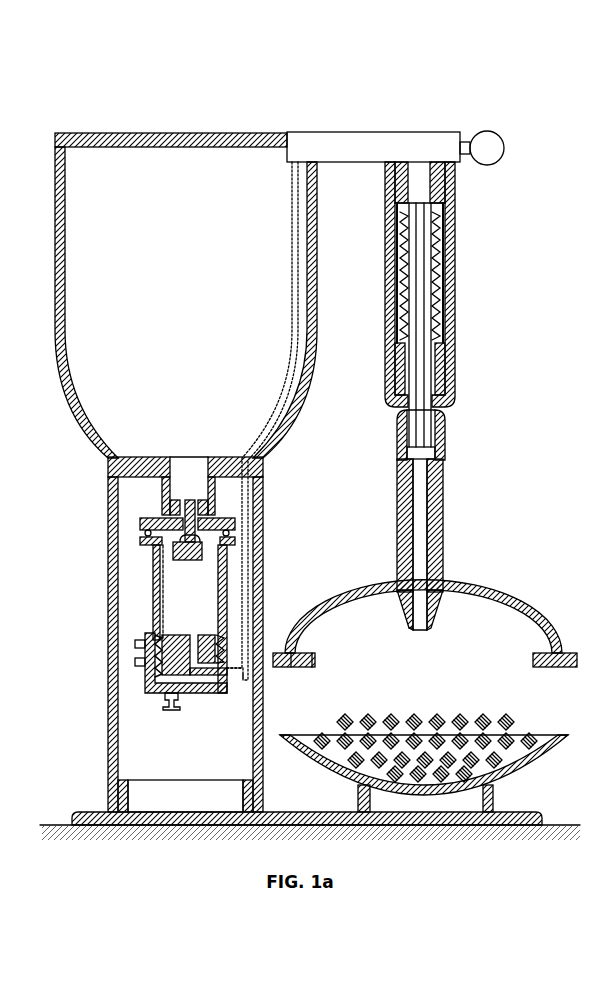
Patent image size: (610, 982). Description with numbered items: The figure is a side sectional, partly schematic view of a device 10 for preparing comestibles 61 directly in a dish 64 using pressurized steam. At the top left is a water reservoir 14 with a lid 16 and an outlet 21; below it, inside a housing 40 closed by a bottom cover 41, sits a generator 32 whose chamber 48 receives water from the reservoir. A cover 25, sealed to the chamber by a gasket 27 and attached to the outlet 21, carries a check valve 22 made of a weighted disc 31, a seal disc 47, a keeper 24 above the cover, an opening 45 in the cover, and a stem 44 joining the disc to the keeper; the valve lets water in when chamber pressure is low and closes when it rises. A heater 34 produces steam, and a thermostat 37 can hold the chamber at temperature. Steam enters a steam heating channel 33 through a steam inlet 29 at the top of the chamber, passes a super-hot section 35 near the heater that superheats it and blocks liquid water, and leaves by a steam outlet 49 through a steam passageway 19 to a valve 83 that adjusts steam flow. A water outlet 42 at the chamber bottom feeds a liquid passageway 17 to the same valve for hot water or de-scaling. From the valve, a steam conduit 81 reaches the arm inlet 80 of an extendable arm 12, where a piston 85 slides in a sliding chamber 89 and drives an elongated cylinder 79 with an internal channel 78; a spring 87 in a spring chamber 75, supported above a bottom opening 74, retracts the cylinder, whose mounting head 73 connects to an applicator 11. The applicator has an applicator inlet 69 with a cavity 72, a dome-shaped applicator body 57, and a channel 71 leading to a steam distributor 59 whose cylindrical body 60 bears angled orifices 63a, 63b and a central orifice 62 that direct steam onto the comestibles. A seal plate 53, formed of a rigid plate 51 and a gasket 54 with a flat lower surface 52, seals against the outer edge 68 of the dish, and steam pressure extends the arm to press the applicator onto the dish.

The device 10 is at (313, 111).
The applicator 11 is at (482, 575).
The extendable member or arm 12 is at (465, 354).
The water reservoir 14 is at (107, 308).
The lid 16 is at (128, 148).
The liquid passageway 17 is at (291, 253).
The steam passageway 19 is at (297, 290).
The outlet 21 is at (176, 468).
The check valve 22 is at (184, 480).
The keeper 24 is at (191, 500).
The cover 25 is at (140, 517).
The gasket 27 is at (143, 530).
The steam inlet 29 is at (141, 541).
The disc 31 is at (175, 548).
The generator 32 is at (143, 589).
The steam heating channel 33 is at (153, 614).
The heater 34 is at (139, 654).
The super-hot section 35 is at (149, 672).
The thermostat 37 is at (165, 698).
The housing 40 is at (108, 738).
The bottom cover 41 is at (273, 810).
The water outlet 42 is at (192, 637).
The stem 44 is at (206, 505).
The opening 45 is at (236, 522).
The seal disc 47 is at (237, 541).
The chamber 48 is at (209, 578).
The steam outlet 49 is at (232, 685).
The rigid plate 51 is at (314, 655).
The lower surface 52 is at (291, 667).
The seal plate 53 is at (524, 668).
The gasket 54 is at (317, 666).
The applicator body 57 is at (350, 596).
The steam distributor 59 is at (385, 613).
The cylindrical body 60 is at (408, 625).
The comestibles 61 is at (482, 727).
The central orifice 62 is at (420, 630).
The orifice 63a is at (437, 617).
The orifice 63b is at (442, 593).
The dish 64 is at (538, 775).
The outer edge 68 is at (555, 733).
The applicator inlet 69 is at (397, 500).
The channel 71 is at (421, 505).
The cavity 72 is at (437, 452).
The mounting head 73 is at (446, 432).
The bottom opening 74 is at (393, 398).
The spring chamber 75 is at (397, 360).
The channel 78 is at (418, 281).
The elongated cylinder 79 is at (407, 249).
The arm inlet 80 is at (389, 193).
The steam conduit 81 is at (391, 179).
The valve 83 is at (487, 131).
The piston 85 is at (438, 213).
The spring 87 is at (438, 244).
The sliding chamber 89 is at (440, 291).